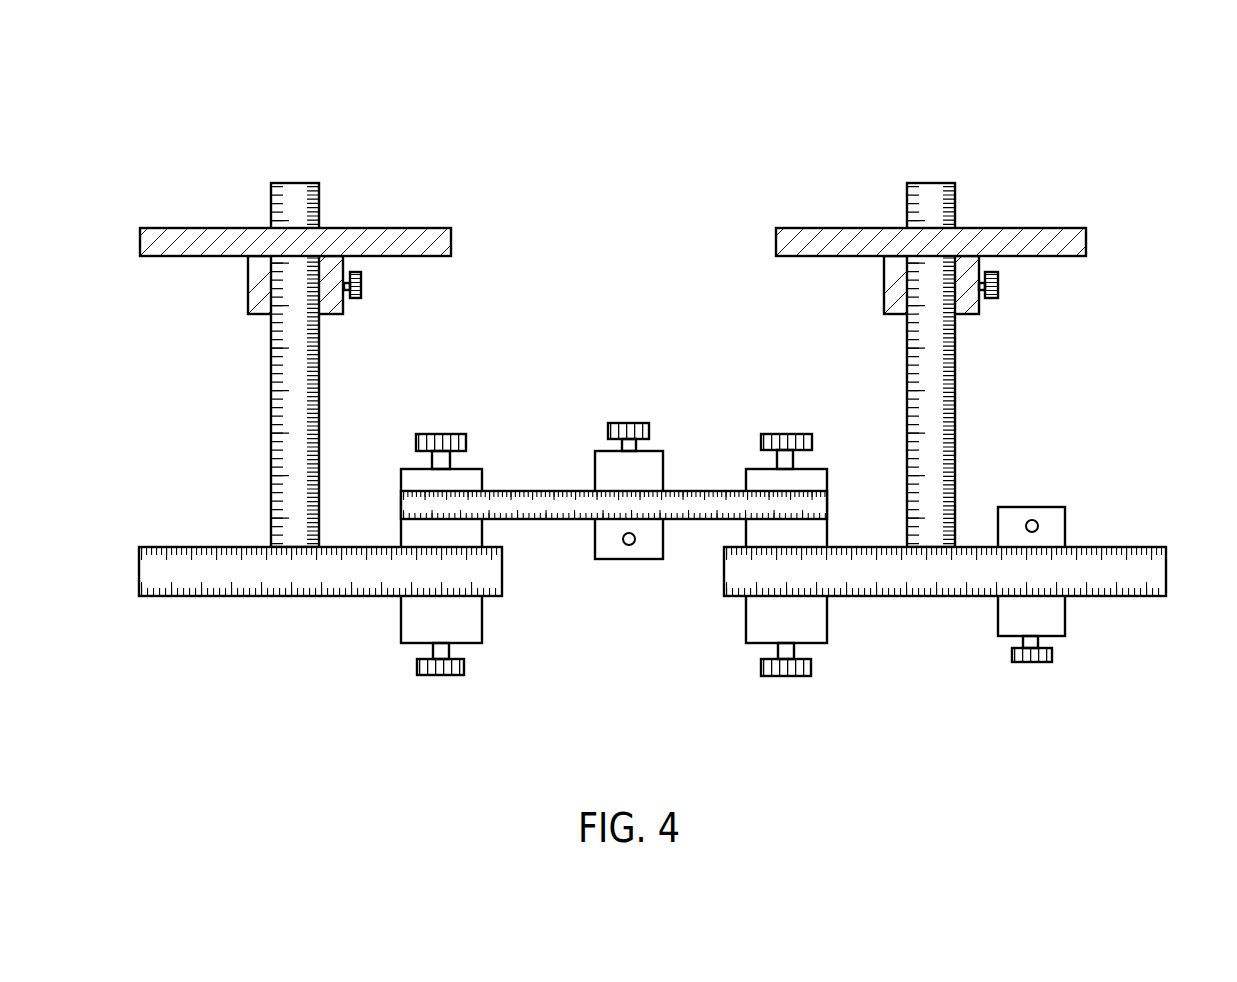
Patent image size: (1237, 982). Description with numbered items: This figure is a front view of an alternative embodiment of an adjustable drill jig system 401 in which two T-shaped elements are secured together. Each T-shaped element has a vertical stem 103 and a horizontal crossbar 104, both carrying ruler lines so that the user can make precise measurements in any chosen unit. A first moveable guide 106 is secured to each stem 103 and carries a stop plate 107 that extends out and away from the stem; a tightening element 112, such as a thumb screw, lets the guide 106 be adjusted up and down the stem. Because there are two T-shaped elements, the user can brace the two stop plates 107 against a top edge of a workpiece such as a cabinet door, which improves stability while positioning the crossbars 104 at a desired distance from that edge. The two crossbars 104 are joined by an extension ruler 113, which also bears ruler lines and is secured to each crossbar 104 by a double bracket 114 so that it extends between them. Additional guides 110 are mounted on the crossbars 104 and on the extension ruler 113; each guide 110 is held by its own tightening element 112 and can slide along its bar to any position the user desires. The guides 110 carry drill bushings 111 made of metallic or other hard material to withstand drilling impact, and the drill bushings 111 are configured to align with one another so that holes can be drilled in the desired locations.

The adjustable drill jig system 401 is at (1090, 117).
The stem 103 is at (320, 350).
The crossbar 104 is at (161, 597).
The first moveable guide 106 is at (248, 285).
The stop plate 107 is at (188, 227).
The guide 110 is at (595, 457).
The drill bushing 111 is at (629, 546).
The tightening element 112 is at (362, 285).
The extension ruler 113 is at (700, 490).
The double bracket 114 is at (483, 627).